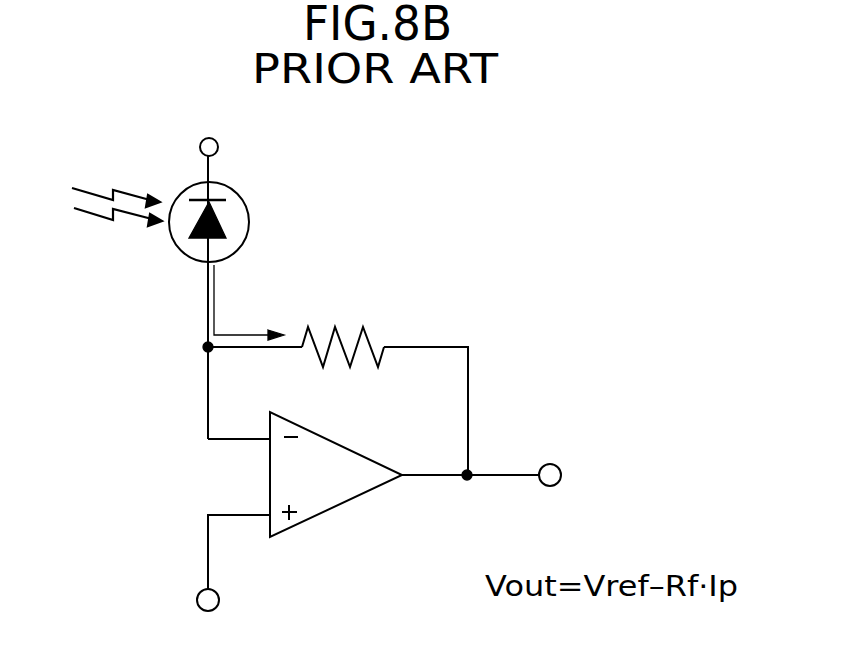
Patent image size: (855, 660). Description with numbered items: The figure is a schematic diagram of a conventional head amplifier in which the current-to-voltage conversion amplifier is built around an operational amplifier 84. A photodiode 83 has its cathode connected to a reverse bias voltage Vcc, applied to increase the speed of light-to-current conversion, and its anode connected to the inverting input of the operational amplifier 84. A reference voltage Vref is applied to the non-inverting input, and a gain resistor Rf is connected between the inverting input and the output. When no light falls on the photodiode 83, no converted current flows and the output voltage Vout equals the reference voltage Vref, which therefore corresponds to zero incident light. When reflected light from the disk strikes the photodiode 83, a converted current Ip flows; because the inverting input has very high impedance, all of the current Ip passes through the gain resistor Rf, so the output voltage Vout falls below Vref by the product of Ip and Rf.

The photodiode 83 is at (252, 215).
The operational amplifier 84 is at (330, 515).
The gain resistor Rf is at (343, 327).
The converted current Ip is at (249, 302).
The reverse bias voltage Vcc is at (252, 154).
The reference voltage Vref is at (253, 608).
The output voltage Vout is at (593, 474).